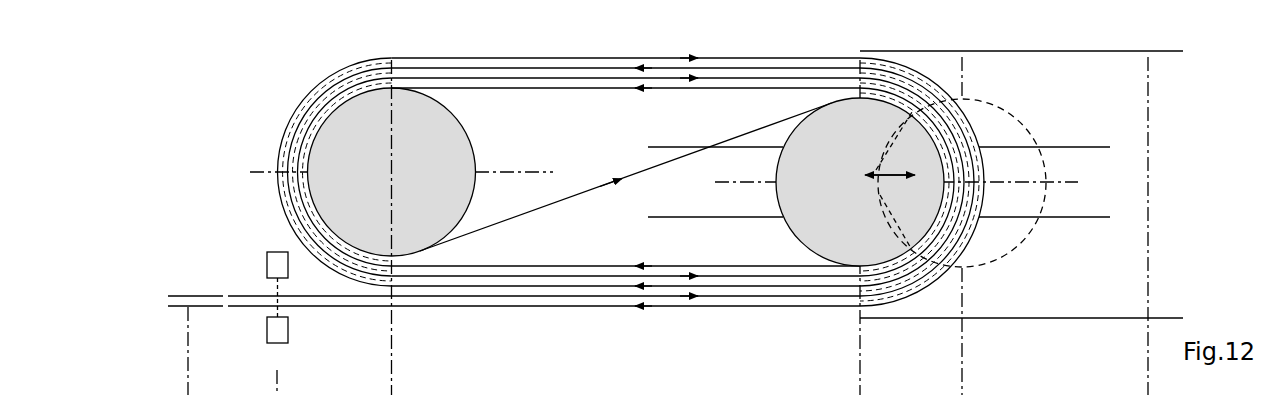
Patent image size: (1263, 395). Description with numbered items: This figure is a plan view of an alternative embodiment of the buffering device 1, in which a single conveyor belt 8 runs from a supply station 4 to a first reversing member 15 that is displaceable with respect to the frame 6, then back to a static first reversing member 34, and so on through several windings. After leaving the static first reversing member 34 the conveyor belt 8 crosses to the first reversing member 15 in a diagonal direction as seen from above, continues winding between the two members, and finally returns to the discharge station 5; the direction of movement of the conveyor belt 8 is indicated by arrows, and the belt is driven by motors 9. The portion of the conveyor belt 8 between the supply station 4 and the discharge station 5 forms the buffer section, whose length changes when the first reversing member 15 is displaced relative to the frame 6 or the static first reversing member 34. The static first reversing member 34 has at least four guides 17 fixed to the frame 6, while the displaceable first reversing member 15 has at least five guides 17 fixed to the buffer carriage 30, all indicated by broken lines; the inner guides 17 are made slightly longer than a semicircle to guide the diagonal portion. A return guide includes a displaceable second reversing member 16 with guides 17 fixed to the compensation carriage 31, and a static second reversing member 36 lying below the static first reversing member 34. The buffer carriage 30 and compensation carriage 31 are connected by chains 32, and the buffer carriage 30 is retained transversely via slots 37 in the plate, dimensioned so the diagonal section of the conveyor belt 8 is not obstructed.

The buffering device 1 is at (584, 45).
The supply station 4 is at (361, 297).
The discharge station 5 is at (388, 307).
The frame 6 is at (463, 95).
The conveyor belt 8 is at (482, 307).
The motor 9 is at (267, 262).
The first reversing member 15 is at (937, 120).
The second reversing member 16 is at (977, 98).
The guides 17 is at (353, 80).
The buffer carriage 30 is at (870, 118).
The compensation carriage 31 is at (995, 253).
The chains 32 is at (1020, 50).
The static first reversing member 34 is at (313, 100).
The static second reversing member 36 is at (288, 112).
The slots 37 is at (743, 217).